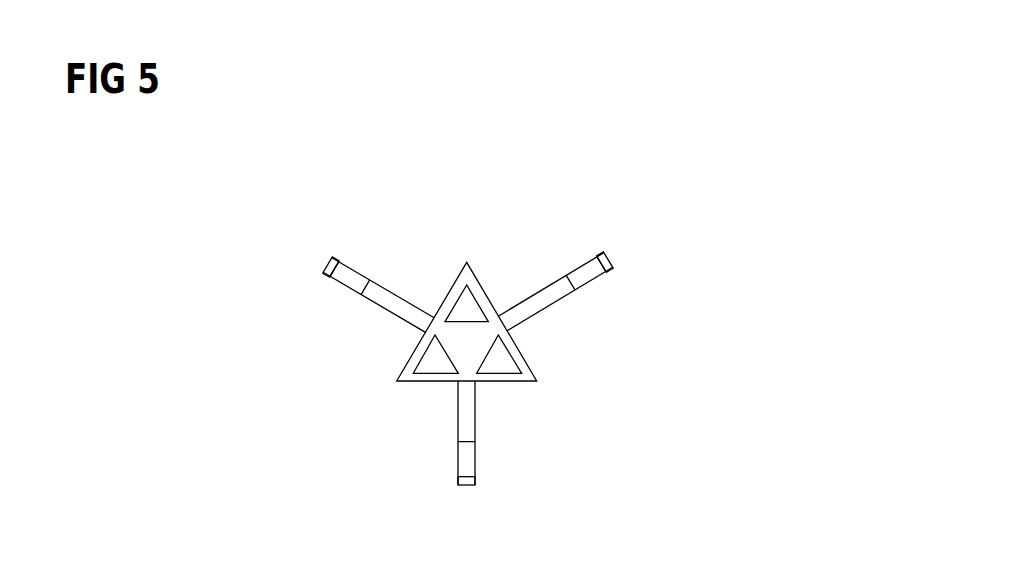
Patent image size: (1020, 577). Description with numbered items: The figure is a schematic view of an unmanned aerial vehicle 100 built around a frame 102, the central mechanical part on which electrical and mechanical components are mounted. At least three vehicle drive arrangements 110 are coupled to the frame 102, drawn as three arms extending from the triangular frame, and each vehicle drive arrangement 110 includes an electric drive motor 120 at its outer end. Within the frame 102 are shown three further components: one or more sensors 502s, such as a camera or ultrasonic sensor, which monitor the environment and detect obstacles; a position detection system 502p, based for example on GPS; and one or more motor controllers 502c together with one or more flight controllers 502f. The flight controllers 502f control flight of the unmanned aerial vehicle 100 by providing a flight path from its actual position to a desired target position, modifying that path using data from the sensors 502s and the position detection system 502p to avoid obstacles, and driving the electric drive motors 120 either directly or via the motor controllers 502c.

The unmanned aerial vehicle 100 is at (566, 136).
The frame 102 is at (513, 383).
The vehicle drive arrangements 110 is at (388, 263).
The electric drive motor 120 is at (343, 268).
The sensors 502s is at (467, 306).
The position detection system 502p is at (435, 362).
The motor controllers 502c is at (500, 360).
The flight controllers 502f is at (557, 353).